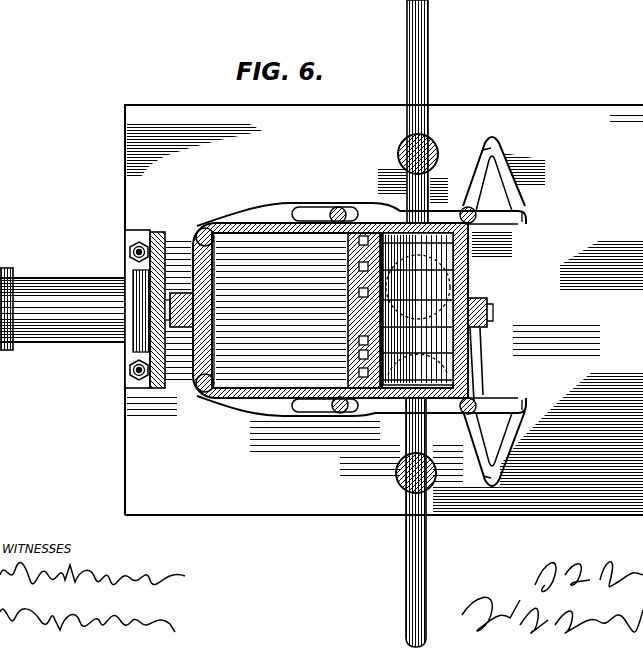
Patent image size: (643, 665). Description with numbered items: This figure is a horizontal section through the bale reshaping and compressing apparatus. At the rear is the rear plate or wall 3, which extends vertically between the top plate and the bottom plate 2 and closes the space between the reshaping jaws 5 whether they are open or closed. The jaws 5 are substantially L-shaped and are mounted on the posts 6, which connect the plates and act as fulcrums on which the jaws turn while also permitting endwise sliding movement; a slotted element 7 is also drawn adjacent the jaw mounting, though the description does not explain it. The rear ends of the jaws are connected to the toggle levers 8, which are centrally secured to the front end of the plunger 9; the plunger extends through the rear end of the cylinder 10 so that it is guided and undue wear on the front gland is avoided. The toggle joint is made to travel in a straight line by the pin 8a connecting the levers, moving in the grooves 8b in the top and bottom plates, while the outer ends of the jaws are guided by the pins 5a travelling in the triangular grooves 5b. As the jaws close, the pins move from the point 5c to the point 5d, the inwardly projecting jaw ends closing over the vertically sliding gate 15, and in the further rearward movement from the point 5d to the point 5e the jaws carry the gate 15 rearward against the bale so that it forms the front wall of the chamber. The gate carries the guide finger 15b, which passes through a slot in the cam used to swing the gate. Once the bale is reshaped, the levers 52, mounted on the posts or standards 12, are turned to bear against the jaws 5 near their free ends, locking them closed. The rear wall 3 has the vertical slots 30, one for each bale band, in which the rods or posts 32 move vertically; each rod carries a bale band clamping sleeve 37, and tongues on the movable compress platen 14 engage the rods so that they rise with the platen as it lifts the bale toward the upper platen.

The bottom plate 2 is at (476, 378).
The rear plate or wall 3 is at (345, 262).
The reshaping jaws 5 is at (278, 233).
The pins 5a is at (486, 232).
The triangular grooves 5b is at (518, 190).
The point 5c is at (495, 150).
The point 5d is at (524, 217).
The point 5e is at (460, 311).
The posts 6 is at (340, 207).
The slot 7 is at (304, 206).
The toggle levers 8 is at (187, 298).
The pin 8a is at (176, 290).
The grooves 8b is at (303, 318).
The plunger 9 is at (184, 327).
The cylinder 10 is at (66, 314).
The posts or standards 12 is at (400, 150).
The movable compress platen 14 is at (498, 271).
The vertically sliding gate 15 is at (474, 331).
The guide finger 15b is at (503, 297).
The vertical slots 30 is at (358, 372).
The rods or posts 32 is at (358, 355).
The bale band clamping sleeve 37 is at (358, 340).
The levers 52 is at (428, 72).